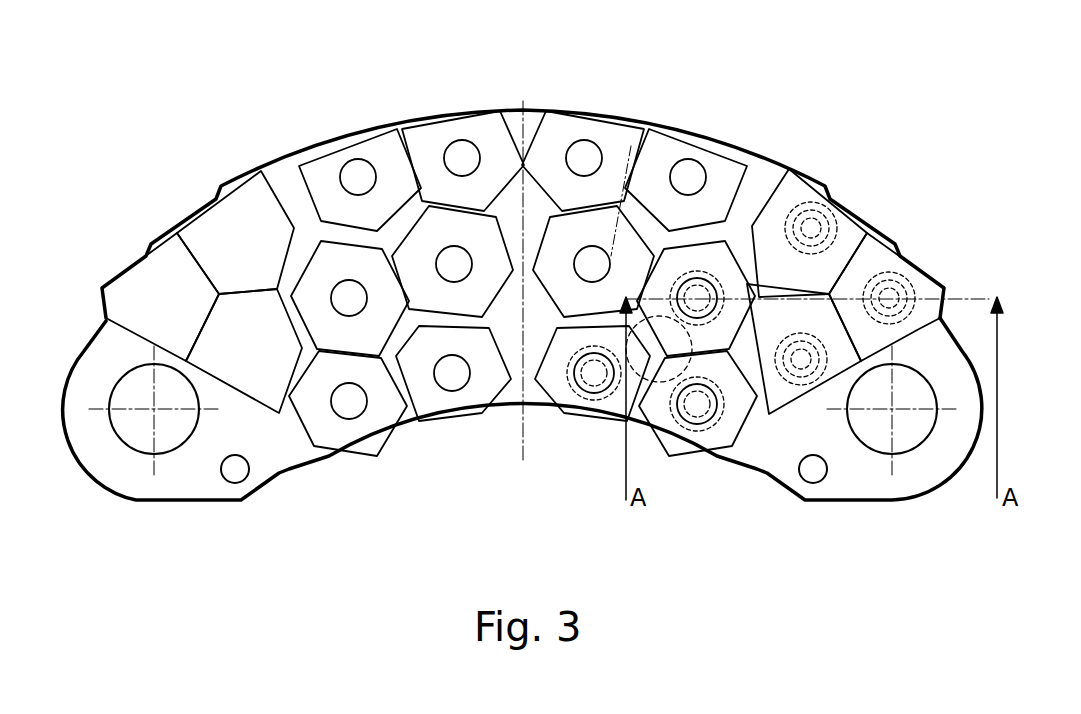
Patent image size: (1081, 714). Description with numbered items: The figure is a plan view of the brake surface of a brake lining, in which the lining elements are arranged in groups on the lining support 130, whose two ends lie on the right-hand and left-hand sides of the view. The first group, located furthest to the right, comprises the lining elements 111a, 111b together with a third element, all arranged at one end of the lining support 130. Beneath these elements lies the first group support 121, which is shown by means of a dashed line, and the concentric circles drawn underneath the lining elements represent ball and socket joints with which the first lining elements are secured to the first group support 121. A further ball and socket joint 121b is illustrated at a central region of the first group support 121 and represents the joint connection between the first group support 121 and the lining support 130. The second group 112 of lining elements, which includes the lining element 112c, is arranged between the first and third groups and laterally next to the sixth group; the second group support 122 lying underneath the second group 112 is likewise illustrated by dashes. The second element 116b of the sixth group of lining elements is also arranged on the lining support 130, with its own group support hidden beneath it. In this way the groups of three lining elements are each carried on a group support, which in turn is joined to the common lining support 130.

The lining support 130 is at (857, 473).
The second element of the sixth group 116b is at (587, 232).
The lining element 112c is at (718, 258).
The second group support 122 is at (617, 400).
The second group 112 is at (718, 440).
The ball and socket joint 121b is at (852, 257).
The lining element 111b is at (780, 307).
The lining element 111a is at (940, 308).
The first group support 121 is at (930, 287).